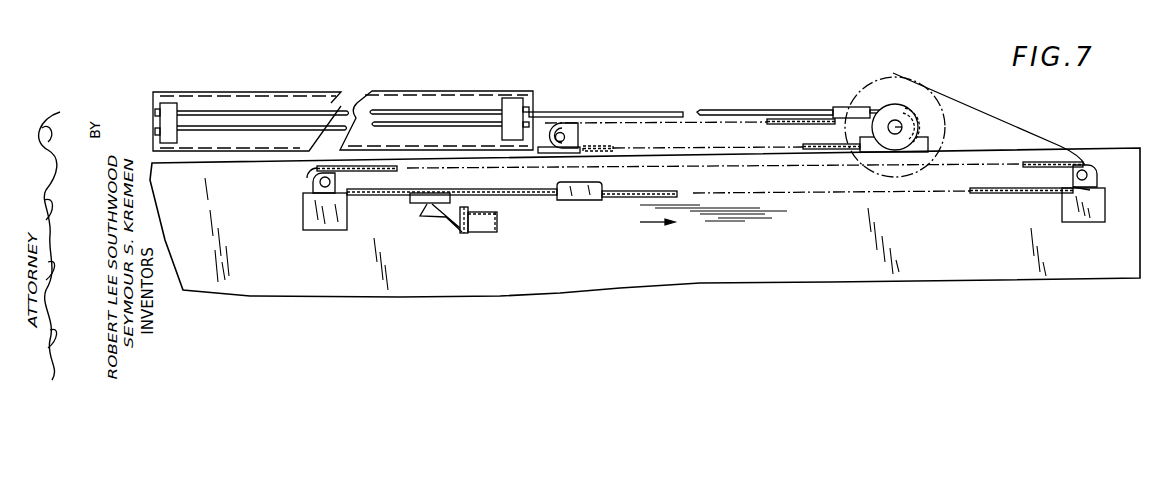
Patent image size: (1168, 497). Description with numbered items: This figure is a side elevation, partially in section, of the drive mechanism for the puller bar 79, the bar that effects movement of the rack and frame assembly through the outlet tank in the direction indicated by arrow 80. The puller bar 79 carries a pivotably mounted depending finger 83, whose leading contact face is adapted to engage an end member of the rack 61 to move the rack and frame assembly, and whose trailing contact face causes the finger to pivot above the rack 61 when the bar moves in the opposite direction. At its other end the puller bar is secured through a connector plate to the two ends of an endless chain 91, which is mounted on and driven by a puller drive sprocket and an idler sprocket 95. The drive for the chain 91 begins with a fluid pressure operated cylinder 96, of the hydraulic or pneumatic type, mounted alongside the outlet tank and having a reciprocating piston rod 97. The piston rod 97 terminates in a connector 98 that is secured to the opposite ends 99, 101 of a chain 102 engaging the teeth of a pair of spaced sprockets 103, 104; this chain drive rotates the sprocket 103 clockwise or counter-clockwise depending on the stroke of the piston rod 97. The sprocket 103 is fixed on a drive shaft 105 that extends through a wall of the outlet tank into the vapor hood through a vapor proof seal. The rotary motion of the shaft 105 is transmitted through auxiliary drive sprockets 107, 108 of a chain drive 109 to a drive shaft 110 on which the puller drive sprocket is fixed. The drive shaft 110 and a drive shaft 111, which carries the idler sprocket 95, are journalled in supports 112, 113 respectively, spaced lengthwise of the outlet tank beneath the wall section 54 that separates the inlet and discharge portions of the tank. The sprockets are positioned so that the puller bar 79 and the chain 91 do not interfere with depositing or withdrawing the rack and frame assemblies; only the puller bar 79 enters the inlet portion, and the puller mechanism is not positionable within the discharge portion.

The wall section 54 is at (1077, 148).
The rack 61 is at (463, 237).
The puller bar 79 is at (541, 199).
The arrow 80 is at (643, 224).
The depending finger 83 is at (447, 208).
The endless chain 91 is at (390, 195).
The idler sprocket 95 is at (312, 175).
The fluid pressure operated cylinder 96 is at (208, 121).
The piston rod 97 is at (631, 113).
The connector 98 is at (840, 107).
The end of chain 99 is at (878, 114).
The end of chain 101 is at (837, 123).
The chain 102 is at (694, 120).
The sprocket 103 is at (899, 116).
The sprocket 104 is at (590, 120).
The drive shaft 105 is at (908, 128).
The auxiliary drive sprocket 107 is at (893, 74).
The auxiliary drive sprocket 108 is at (1070, 186).
The chain drive 109 is at (1012, 126).
The drive shaft 110 is at (1095, 173).
The drive shaft 111 is at (333, 182).
The support 112 is at (1093, 203).
The support 113 is at (310, 218).